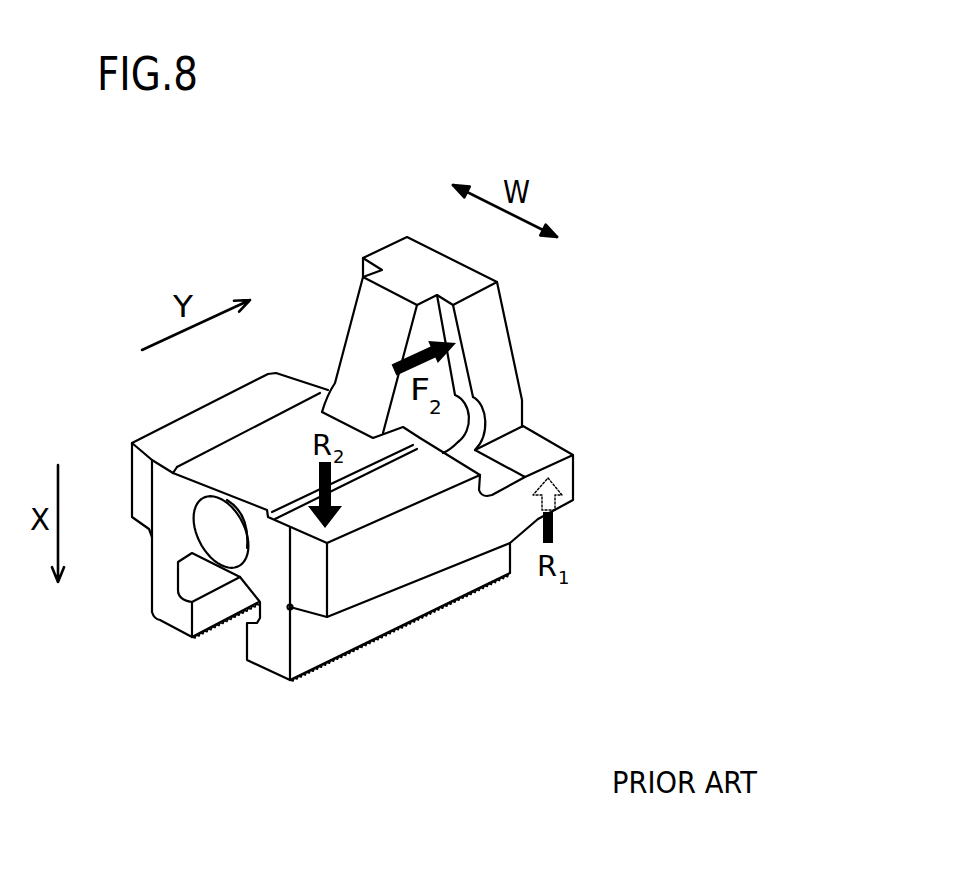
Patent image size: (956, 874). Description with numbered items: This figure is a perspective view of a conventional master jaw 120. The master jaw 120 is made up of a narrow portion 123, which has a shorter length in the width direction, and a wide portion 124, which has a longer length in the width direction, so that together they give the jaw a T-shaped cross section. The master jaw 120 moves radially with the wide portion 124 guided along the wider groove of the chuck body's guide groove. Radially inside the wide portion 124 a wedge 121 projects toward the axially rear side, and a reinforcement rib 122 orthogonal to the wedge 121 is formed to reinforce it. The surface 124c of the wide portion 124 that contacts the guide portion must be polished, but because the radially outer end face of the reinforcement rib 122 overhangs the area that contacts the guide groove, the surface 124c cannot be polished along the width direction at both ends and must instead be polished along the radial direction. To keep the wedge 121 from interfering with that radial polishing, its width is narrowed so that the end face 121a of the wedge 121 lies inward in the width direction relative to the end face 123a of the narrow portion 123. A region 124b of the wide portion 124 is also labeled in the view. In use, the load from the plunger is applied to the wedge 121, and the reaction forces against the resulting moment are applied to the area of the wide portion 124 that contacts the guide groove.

The master jaw 120 is at (407, 208).
The wedge 121 is at (492, 325).
The end face of the wedge 121a is at (501, 357).
The reinforcement rib 122 is at (367, 347).
The narrow portion 123 is at (392, 608).
The end face of the narrow portion 123a is at (327, 645).
The wide portion 124 is at (432, 538).
The shelf portion 124b is at (535, 447).
The surface of the wide portion 124c is at (377, 468).